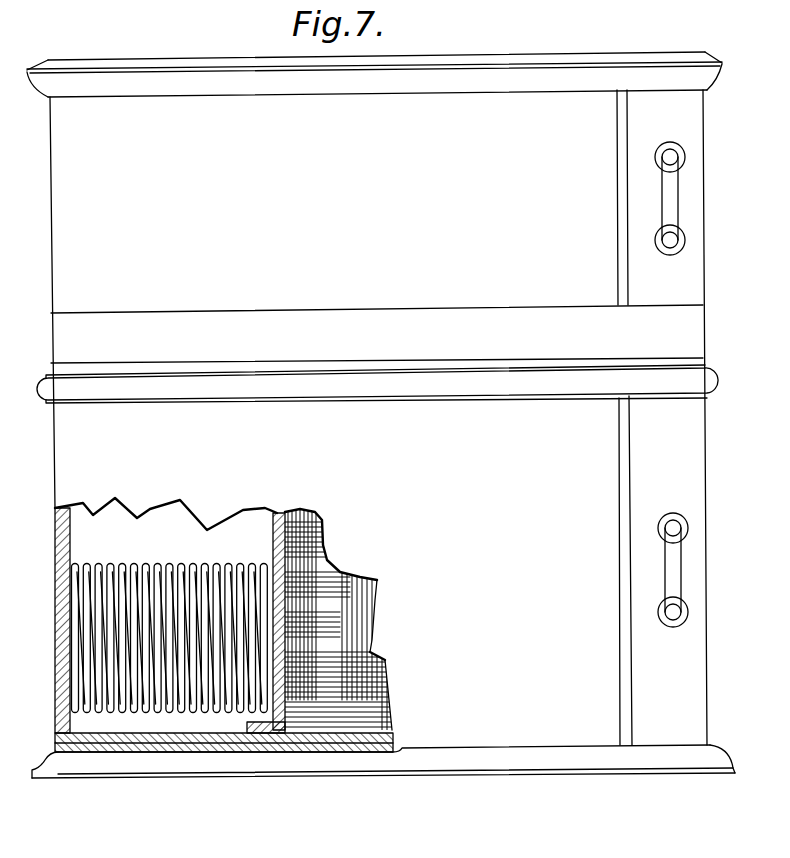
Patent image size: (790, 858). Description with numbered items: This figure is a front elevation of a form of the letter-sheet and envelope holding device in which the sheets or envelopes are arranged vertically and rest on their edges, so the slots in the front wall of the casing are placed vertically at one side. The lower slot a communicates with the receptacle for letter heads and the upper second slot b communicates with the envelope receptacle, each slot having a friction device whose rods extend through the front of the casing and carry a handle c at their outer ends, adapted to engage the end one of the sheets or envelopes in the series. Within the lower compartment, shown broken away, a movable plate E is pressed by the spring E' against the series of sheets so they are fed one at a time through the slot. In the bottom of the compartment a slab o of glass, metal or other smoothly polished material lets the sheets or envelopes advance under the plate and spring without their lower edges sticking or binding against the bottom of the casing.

The slot a is at (620, 473).
The second slot b is at (620, 174).
The handle c is at (669, 198).
The movable plate E is at (257, 623).
The springs E' is at (170, 621).
The slab o is at (200, 755).